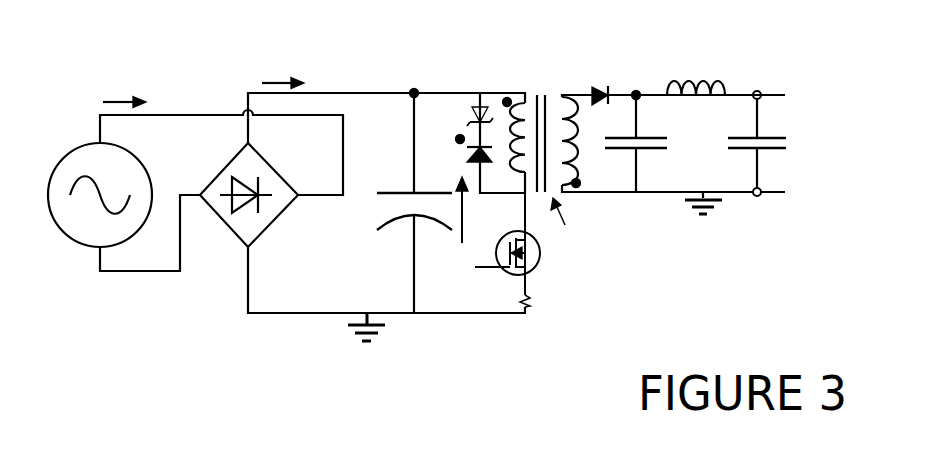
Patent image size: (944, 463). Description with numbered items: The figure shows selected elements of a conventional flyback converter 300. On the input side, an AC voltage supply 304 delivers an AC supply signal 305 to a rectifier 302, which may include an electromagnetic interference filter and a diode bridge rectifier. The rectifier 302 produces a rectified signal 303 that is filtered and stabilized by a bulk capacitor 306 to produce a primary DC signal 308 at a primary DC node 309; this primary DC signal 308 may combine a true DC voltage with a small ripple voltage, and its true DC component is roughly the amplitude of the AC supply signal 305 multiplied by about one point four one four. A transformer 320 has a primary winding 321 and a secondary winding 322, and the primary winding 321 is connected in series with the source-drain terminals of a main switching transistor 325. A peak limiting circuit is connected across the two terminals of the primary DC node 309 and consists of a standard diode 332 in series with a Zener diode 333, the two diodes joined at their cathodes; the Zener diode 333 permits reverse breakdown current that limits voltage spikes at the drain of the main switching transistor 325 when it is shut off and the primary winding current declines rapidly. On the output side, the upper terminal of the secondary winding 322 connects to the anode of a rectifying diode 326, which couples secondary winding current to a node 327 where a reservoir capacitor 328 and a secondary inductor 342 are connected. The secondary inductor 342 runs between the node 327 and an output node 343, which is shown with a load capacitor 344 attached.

The flyback converter 300 is at (702, 275).
The rectifier 302 is at (283, 176).
The rectified signal 303 is at (264, 83).
The AC voltage supply 304 is at (101, 223).
The AC supply signal 305 is at (104, 101).
The bulk capacitor 306 is at (414, 242).
The primary DC signal 308 is at (467, 207).
The primary DC node 309 is at (413, 90).
The transformer 320 is at (576, 222).
The primary winding 321 is at (513, 166).
The secondary winding 322 is at (578, 154).
The main switching transistor 325 is at (558, 265).
The rectifying diode 326 is at (593, 92).
The node 327 is at (636, 91).
The reservoir capacitor 328 is at (648, 150).
The standard diode 332 is at (468, 153).
The Zener diode 333 is at (470, 115).
The secondary inductor 342 is at (705, 80).
The output node 343 is at (757, 91).
The load capacitor 344 is at (775, 150).